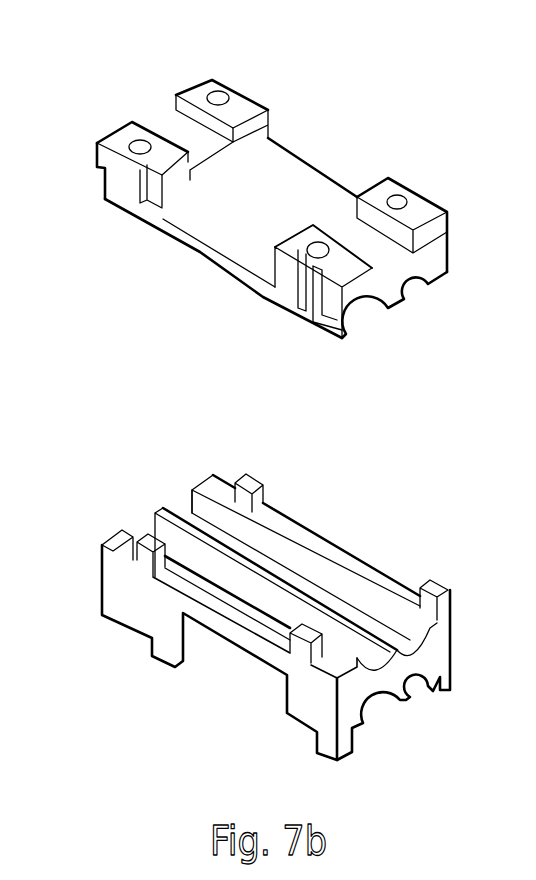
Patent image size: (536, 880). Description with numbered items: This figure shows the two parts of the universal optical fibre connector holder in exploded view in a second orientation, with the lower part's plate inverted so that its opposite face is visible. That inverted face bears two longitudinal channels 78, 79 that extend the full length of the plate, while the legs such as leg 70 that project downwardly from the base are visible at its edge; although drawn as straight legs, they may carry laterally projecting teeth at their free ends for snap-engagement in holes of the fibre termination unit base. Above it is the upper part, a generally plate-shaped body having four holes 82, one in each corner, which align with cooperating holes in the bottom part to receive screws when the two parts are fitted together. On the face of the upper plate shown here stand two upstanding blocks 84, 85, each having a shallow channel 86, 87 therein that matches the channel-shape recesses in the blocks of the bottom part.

The leg 70 is at (258, 643).
The longitudinal channel 78 is at (194, 517).
The longitudinal channel 79 is at (157, 535).
The hole 82 is at (117, 143).
The upstanding block 84 is at (193, 97).
The upstanding block 85 is at (432, 214).
The shallow channel 86 is at (180, 130).
The shallow channel 87 is at (295, 188).